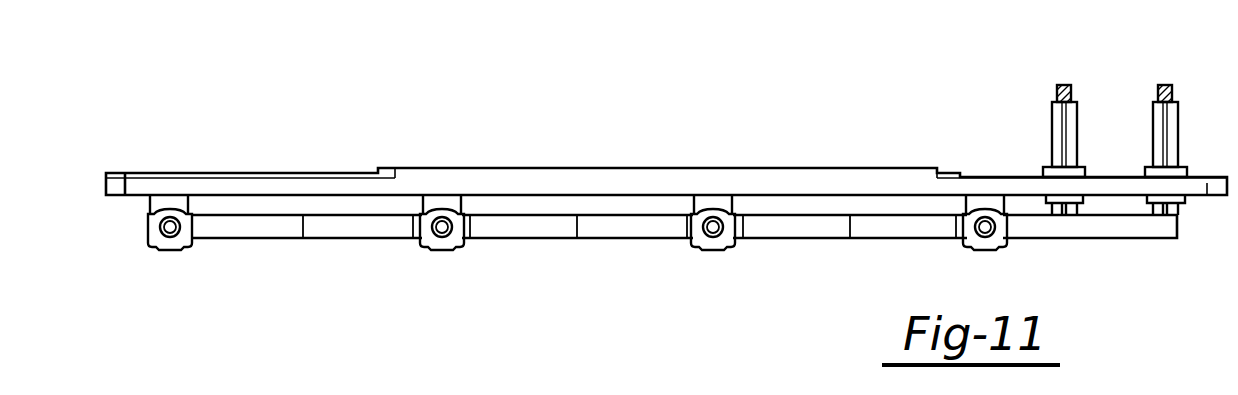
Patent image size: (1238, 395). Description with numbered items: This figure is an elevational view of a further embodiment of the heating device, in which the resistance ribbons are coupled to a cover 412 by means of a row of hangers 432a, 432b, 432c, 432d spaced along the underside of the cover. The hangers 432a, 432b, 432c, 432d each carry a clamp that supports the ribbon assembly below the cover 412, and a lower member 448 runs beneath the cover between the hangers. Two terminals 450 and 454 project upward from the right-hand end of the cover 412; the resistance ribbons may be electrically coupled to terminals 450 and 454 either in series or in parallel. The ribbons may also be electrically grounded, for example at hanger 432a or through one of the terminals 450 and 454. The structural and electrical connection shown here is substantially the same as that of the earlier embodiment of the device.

The cover 412 is at (812, 127).
The hanger 432a is at (994, 200).
The hanger 432b is at (700, 205).
The hanger 432c is at (456, 205).
The hanger 432d is at (186, 203).
The lower rail 448 is at (823, 230).
The terminal 450 is at (1165, 85).
The terminal 454 is at (1064, 85).